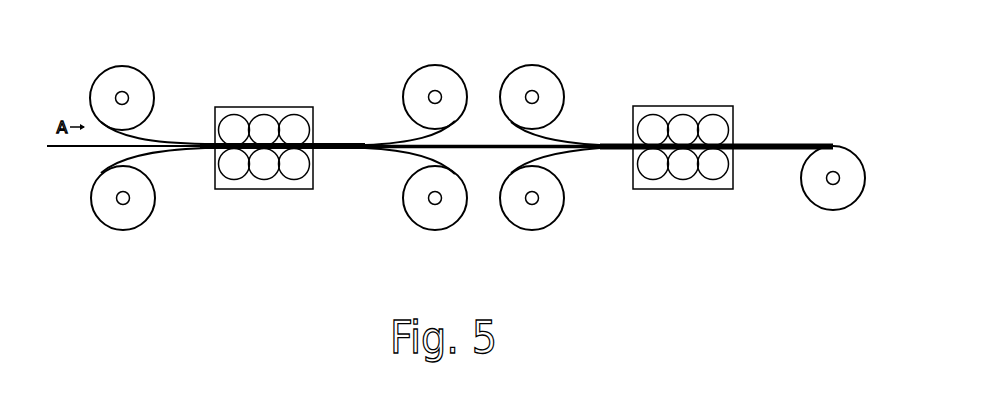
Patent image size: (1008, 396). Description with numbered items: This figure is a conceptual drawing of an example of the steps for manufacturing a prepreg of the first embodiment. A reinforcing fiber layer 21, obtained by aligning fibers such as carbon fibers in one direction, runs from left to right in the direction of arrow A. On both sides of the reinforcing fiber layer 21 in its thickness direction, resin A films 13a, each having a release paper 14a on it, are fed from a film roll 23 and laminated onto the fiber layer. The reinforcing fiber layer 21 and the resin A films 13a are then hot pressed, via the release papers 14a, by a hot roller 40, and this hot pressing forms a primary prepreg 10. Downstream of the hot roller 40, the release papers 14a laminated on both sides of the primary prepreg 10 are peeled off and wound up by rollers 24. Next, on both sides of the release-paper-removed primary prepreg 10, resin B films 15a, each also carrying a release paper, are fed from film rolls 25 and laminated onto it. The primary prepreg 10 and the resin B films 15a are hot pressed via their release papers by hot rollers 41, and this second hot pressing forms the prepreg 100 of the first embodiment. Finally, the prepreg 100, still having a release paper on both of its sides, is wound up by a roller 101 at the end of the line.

The primary prepreg 10 is at (482, 145).
The reinforcing fiber layer 21 is at (82, 147).
The film roll 23 is at (137, 103).
The resin A film 13a is at (162, 138).
The hot roller 40 is at (265, 162).
The roller 24 is at (423, 97).
The release paper 14a is at (400, 138).
The film roll 25 is at (543, 97).
The resin B film 15a is at (560, 138).
The hot roller 41 is at (688, 162).
The prepreg 100 is at (762, 143).
The roller 101 is at (838, 190).